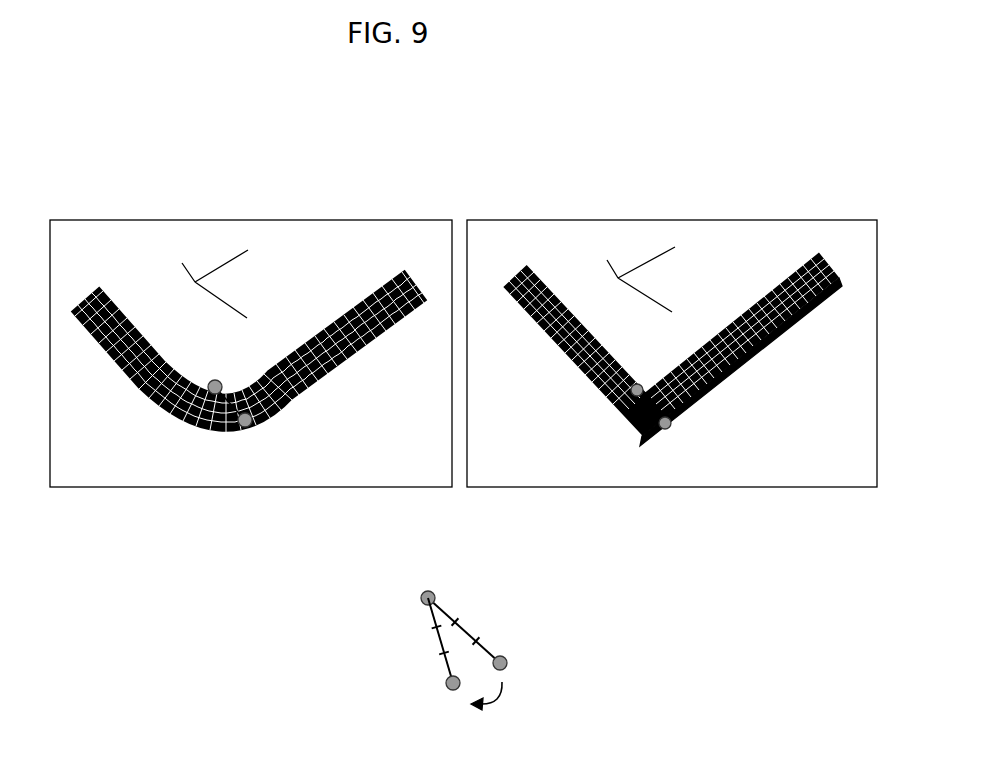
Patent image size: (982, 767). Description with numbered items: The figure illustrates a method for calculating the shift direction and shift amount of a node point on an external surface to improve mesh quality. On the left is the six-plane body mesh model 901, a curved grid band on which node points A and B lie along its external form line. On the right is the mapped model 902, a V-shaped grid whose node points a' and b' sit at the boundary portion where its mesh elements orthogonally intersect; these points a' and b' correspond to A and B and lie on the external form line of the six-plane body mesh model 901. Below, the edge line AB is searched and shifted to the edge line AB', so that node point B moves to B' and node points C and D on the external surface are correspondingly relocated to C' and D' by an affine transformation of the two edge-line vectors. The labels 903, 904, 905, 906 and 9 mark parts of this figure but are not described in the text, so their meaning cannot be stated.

The six-plane body mesh model 901 is at (365, 325).
The mapped model 902 is at (675, 340).
The original segment AB 903 is at (416, 619).
The transformed segment AB' 904 is at (515, 658).
The transformation arrow from B to B' 905 is at (539, 653).
The frame of the reduced model view 906 is at (708, 481).
The reduced model view 9 is at (574, 340).